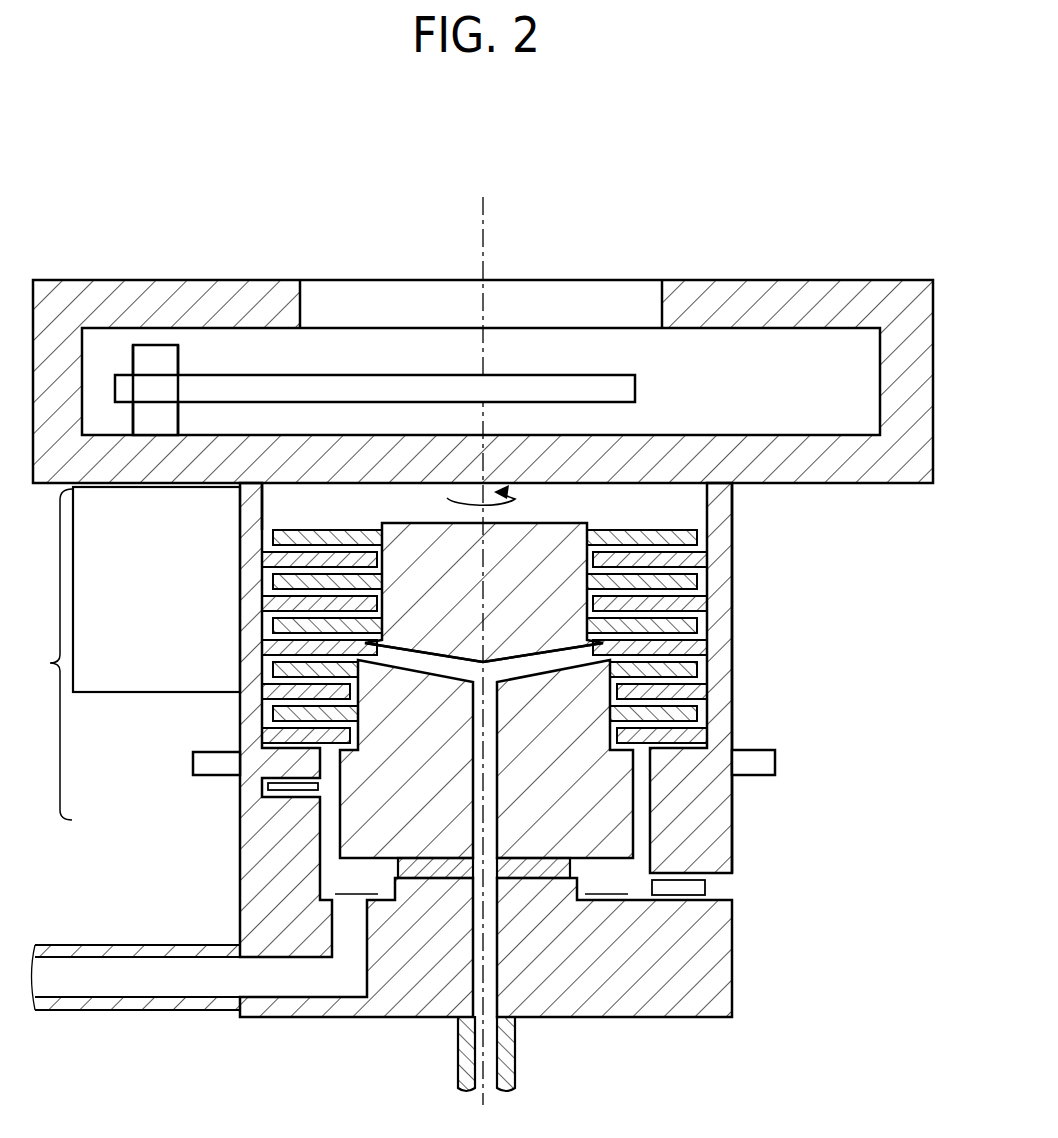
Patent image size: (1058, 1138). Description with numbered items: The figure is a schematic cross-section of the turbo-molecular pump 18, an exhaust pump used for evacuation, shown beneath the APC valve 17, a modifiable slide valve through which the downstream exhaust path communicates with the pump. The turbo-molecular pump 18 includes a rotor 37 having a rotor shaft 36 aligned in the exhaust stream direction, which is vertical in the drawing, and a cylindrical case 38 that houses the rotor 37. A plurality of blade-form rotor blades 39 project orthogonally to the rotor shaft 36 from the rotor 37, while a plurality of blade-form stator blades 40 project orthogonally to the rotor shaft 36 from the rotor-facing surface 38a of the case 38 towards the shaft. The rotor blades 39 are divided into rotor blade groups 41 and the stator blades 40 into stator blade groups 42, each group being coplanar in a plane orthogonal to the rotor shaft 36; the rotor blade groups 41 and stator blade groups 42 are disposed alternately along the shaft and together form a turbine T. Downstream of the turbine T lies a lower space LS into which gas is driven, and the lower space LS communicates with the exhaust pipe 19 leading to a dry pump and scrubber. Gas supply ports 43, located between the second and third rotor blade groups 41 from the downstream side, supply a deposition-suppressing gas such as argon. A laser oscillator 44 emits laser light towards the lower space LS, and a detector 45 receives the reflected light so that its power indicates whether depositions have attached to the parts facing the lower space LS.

The APC valve 17 is at (813, 280).
The turbo-molecular pump 18 is at (803, 601).
The exhaust pipe 19 is at (100, 1010).
The rotor shaft 36 is at (483, 218).
The rotor 37 is at (537, 522).
The cylindrical case 38 is at (733, 540).
The rotor-facing surface 38a is at (263, 503).
The rotor blades 39 is at (392, 643).
The stator blades 40 is at (397, 676).
The rotor blade groups 41 is at (273, 537).
The stator blade groups 42 is at (262, 560).
The gas supply ports 43 is at (432, 648).
The laser oscillator 44 is at (292, 788).
The detector 45 is at (700, 890).
The turbine T is at (134, 653).
The lower space LS is at (481, 878).